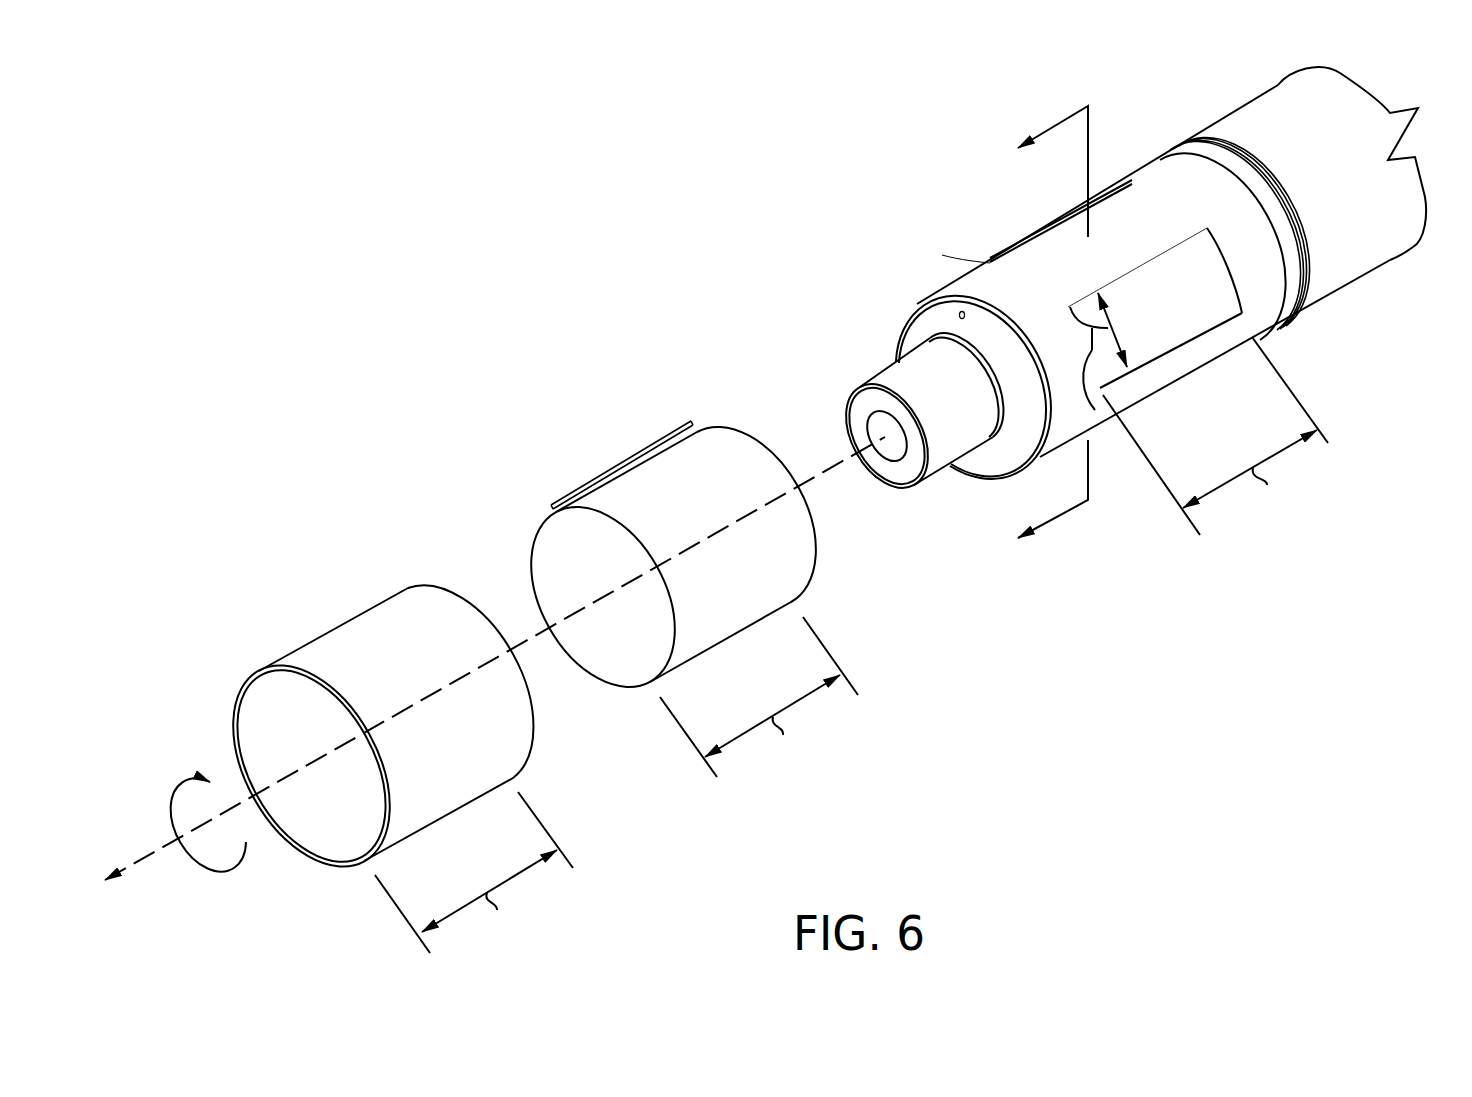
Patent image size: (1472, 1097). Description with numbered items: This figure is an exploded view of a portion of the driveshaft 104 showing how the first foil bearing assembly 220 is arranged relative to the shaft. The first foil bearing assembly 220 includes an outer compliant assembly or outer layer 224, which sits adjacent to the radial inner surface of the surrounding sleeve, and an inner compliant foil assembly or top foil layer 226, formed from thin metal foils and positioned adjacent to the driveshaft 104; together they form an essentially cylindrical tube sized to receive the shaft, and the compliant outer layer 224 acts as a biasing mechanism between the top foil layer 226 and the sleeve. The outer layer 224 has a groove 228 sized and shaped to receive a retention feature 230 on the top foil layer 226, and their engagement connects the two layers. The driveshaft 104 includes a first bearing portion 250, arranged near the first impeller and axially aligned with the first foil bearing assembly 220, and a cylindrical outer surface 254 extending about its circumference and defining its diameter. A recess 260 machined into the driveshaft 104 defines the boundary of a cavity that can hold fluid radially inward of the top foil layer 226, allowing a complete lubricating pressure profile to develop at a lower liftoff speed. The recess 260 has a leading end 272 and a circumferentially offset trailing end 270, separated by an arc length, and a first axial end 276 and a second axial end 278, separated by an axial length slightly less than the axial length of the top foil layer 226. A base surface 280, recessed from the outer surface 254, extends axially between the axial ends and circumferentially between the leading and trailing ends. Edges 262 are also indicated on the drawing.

The driveshaft 104 is at (1298, 102).
The first foil bearing assembly 220 is at (348, 437).
The outer layer 224 is at (350, 633).
The top foil layer 226 is at (702, 460).
The groove 228 is at (257, 670).
The retention feature 230 is at (558, 503).
The first bearing portion 250 is at (979, 131).
The outer surface 254 is at (1182, 187).
The recess 260 is at (1048, 221).
The groove edge 262 is at (1057, 208).
The trailing end 270 is at (1150, 268).
The leading end 272 is at (1203, 332).
The first axial end 276 is at (1112, 403).
The second axial end 278 is at (1236, 151).
The base surface 280 is at (1147, 327).